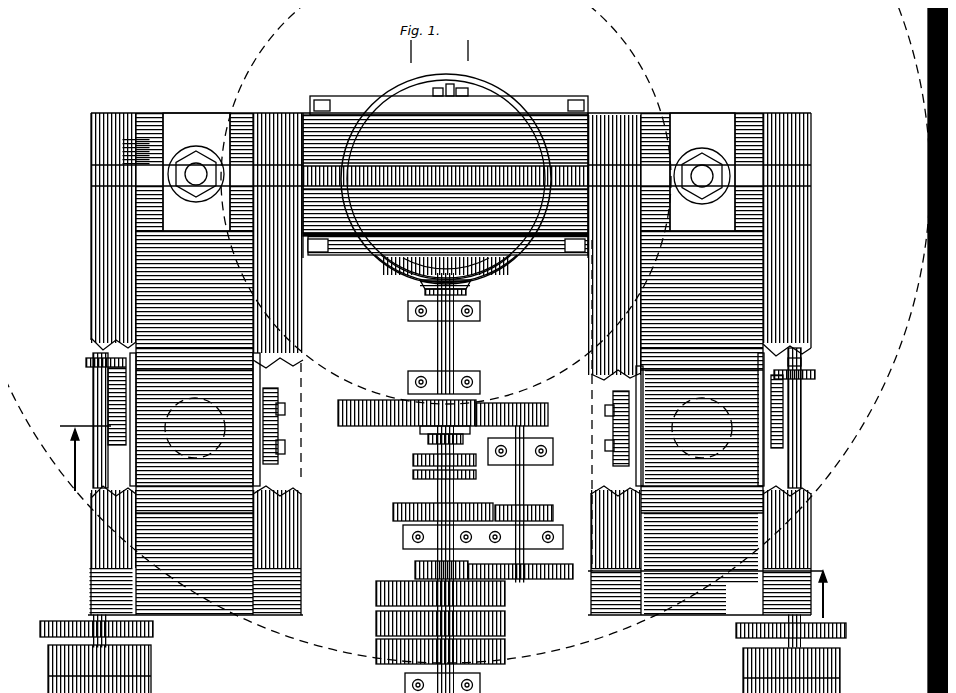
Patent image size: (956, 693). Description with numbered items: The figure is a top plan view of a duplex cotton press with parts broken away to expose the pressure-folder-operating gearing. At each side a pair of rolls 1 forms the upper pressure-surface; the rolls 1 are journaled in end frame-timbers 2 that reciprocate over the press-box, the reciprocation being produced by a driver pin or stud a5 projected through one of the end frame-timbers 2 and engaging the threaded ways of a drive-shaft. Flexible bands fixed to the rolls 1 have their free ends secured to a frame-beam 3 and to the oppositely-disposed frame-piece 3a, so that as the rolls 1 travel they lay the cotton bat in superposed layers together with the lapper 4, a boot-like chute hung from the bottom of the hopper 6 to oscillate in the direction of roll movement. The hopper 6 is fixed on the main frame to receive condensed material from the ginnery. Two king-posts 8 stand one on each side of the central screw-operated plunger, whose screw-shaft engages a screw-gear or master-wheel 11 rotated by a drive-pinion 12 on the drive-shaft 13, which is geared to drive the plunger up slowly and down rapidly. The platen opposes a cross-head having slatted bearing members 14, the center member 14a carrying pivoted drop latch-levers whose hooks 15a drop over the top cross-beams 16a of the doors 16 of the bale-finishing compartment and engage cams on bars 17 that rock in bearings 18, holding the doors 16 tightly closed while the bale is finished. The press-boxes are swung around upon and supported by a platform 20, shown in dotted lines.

The roll 1 is at (205, 280).
The end frame-timber 2 is at (440, 519).
The frame-beam 3 is at (590, 600).
The frame-piece 3a is at (97, 578).
The lapper 4 is at (225, 385).
The driver pin or stud a5 is at (103, 413).
The hopper 6 is at (243, 378).
The king-post 8 is at (449, 172).
The screw-gear or master-wheel 11 is at (497, 247).
The drive-pinion 12 is at (460, 281).
The drive-shaft 13 is at (436, 348).
The slatted bearing member 14 is at (480, 175).
The center member 14a is at (440, 158).
The hook 15a is at (442, 76).
The door 16 is at (352, 96).
The top cross-beam 16a is at (338, 238).
The bar 17 is at (422, 83).
The bearing 18 is at (460, 80).
The platform 20 is at (356, 380).